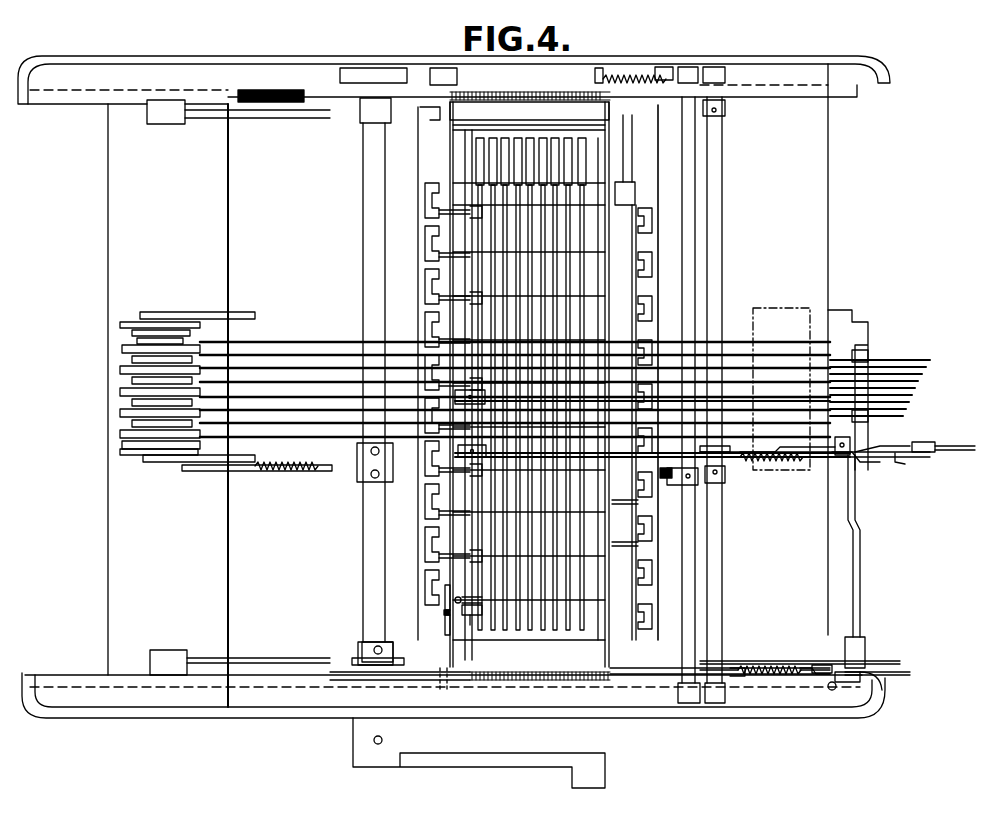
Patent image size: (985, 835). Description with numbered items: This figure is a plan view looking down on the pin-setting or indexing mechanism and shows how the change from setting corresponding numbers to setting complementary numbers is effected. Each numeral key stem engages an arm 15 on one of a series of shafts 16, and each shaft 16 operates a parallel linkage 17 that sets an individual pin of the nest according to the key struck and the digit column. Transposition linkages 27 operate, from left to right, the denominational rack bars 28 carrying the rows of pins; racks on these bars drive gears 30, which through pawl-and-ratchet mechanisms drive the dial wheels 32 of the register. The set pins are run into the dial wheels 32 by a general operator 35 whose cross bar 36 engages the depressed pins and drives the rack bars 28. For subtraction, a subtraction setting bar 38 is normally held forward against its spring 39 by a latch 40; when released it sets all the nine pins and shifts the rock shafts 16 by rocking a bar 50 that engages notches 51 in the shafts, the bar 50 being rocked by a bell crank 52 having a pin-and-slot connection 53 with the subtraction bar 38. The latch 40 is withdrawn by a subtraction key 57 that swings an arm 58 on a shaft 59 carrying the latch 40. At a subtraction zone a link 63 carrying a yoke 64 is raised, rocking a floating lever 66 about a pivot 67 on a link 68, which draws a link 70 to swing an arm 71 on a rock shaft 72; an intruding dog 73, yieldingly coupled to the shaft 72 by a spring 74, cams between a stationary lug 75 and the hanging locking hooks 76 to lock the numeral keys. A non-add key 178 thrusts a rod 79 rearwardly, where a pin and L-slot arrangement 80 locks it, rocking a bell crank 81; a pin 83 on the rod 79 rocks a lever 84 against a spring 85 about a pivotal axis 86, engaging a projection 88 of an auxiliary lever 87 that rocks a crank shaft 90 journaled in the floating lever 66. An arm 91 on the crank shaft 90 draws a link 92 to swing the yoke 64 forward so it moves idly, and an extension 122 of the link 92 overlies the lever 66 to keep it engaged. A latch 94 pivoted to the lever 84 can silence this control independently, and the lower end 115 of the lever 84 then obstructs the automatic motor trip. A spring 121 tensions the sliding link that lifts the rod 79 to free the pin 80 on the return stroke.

The arm 15 is at (425, 240).
The shaft 16 is at (588, 520).
The parallel linkage 17 is at (572, 548).
The linkage 27 is at (900, 372).
The denominational rack bar 28 is at (762, 352).
The gear 30 is at (135, 379).
The dial wheel 32 is at (125, 446).
The general operator 35 is at (630, 674).
The cross bar 36 is at (420, 165).
The subtraction setting bar 38 is at (280, 472).
The spring 39 is at (772, 462).
The latch 40 is at (740, 460).
The bar 50 is at (622, 547).
The notch 51 is at (635, 525).
The bell crank 52 is at (672, 478).
The pin-and-slot connection 53 is at (684, 486).
The subtraction key 57 is at (160, 124).
The arm 58 is at (725, 104).
The shaft 59 is at (722, 574).
The link 63 is at (955, 450).
The yoke 64 is at (926, 442).
The floating lever 66 is at (885, 458).
The pivot 67 is at (850, 460).
The link 68 is at (818, 458).
The link 70 is at (612, 453).
The arm 71 is at (470, 420).
The rock shaft 72 is at (468, 616).
The intruding dog 73 is at (444, 612).
The spring 74 is at (458, 597).
The stationary lug 75 is at (445, 622).
The locking hook 76 is at (446, 595).
The rod 79 is at (748, 670).
The pin and L-slot arrangement 80 is at (416, 686).
The bell crank 81 is at (900, 661).
The pin 83 is at (806, 675).
The lever 84 is at (820, 675).
The spring 85 is at (748, 676).
The pivotal axis 86 is at (832, 690).
The auxiliary lever 87 is at (865, 645).
The projection 88 is at (848, 682).
The crank shaft 90 is at (860, 538).
The arm 91 is at (852, 440).
The link 92 is at (895, 447).
The latch 94 is at (898, 675).
The lower end of lever 115 is at (862, 690).
The spring 121 is at (372, 648).
The extension 122 is at (897, 460).
The non-add key 178 is at (172, 646).